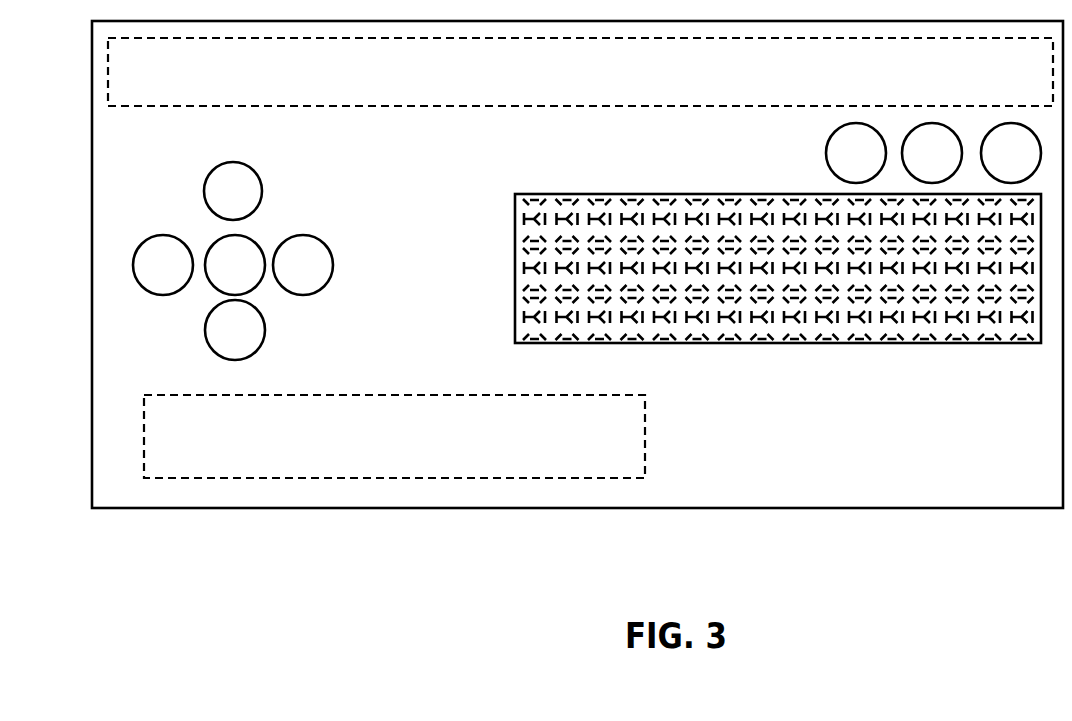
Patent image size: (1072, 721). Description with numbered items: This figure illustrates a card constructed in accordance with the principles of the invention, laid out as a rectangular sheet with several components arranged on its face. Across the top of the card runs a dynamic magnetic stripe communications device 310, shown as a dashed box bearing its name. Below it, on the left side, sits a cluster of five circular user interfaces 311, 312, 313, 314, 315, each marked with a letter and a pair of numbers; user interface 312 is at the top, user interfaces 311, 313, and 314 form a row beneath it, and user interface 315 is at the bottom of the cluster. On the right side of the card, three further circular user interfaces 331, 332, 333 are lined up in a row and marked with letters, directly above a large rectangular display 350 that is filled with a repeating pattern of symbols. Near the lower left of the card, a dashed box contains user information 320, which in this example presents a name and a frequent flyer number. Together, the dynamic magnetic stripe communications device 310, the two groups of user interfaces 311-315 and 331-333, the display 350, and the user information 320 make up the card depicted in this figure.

The dynamic magnetic stripe communications device 310 is at (177, 106).
The user interface 311 is at (165, 235).
The user interface 312 is at (233, 162).
The user interface 313 is at (236, 236).
The user interface 314 is at (332, 263).
The user interface 315 is at (207, 330).
The user information 320 is at (144, 433).
The user interface 331 is at (854, 129).
The user interface 332 is at (939, 129).
The user interface 333 is at (1011, 129).
The display 350 is at (511, 268).